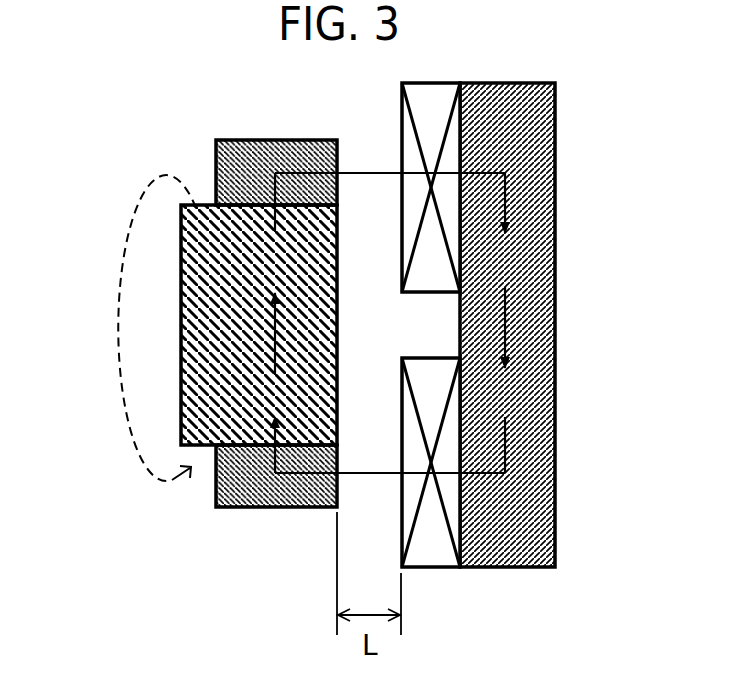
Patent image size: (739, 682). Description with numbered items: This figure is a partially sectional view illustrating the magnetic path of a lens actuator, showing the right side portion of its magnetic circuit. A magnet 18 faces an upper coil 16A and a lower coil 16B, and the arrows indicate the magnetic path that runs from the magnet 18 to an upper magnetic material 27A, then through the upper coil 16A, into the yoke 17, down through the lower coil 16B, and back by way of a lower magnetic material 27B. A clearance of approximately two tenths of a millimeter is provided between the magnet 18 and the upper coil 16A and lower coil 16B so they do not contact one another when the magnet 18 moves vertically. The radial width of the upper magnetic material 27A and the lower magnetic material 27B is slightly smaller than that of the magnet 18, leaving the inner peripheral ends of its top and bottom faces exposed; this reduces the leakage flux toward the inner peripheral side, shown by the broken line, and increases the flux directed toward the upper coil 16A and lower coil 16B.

The upper coil 16A is at (452, 145).
The lower coil 16B is at (453, 527).
The yoke 17 is at (532, 320).
The magnet 18 is at (181, 302).
The upper magnetic material 27A is at (250, 163).
The lower magnetic material 27B is at (248, 493).